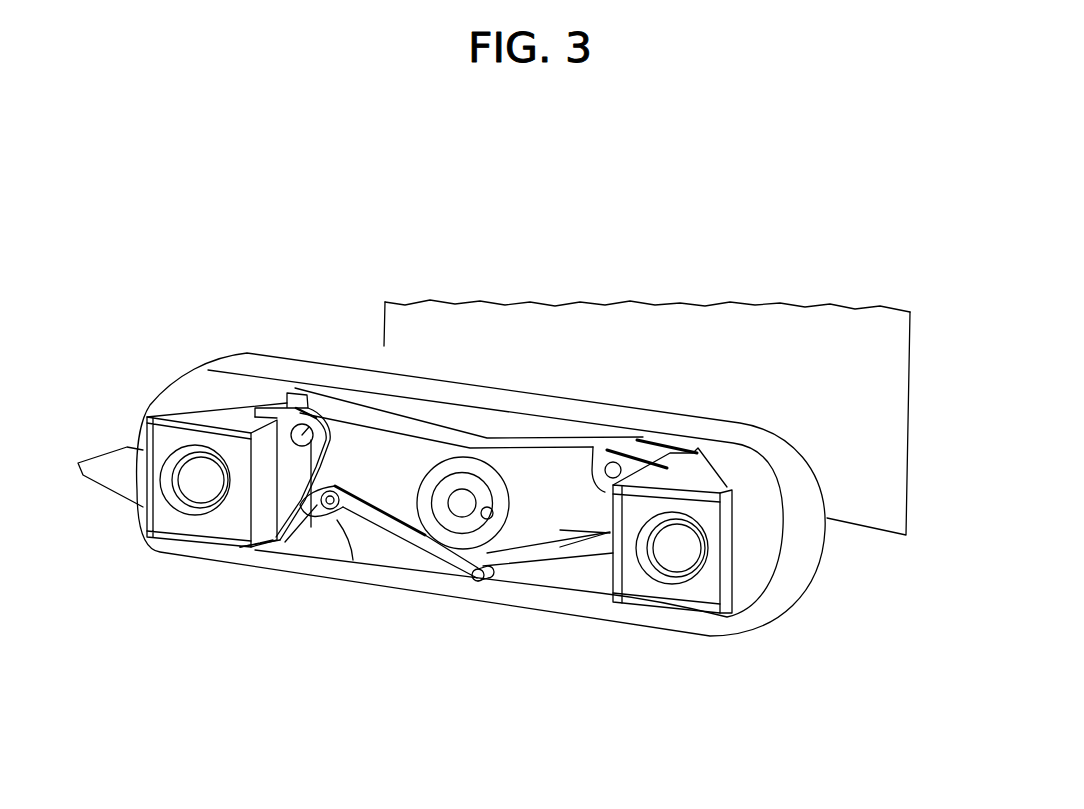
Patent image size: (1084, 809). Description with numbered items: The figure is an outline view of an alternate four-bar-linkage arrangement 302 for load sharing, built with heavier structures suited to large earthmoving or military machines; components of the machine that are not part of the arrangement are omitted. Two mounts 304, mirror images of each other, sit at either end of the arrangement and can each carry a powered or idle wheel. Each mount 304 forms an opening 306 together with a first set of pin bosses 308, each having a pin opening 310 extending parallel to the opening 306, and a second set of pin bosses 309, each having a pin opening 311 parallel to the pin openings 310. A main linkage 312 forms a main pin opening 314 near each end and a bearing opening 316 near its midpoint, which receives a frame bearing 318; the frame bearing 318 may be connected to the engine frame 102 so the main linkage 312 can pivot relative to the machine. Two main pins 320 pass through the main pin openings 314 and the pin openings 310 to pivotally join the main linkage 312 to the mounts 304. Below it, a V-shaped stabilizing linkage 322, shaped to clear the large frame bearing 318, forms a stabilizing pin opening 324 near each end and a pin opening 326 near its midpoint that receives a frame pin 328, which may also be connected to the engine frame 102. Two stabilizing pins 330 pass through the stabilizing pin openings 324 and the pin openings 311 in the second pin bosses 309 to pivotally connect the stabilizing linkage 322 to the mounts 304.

The four-bar-linkage arrangement 302 is at (711, 140).
The engine frame 102 is at (807, 340).
The mount 304 is at (160, 517).
The opening 306 is at (207, 495).
The first set of pin bosses 308 is at (265, 455).
The second set of pin bosses 309 is at (318, 516).
The pin opening 310 is at (253, 413).
The pin opening 311 is at (282, 535).
The main linkage 312 is at (357, 441).
The main pin opening 314 is at (605, 485).
The bearing opening 316 is at (417, 480).
The frame bearing 318 is at (457, 517).
The main pin 320 is at (313, 413).
The stabilizing linkage 322 is at (390, 530).
The stabilizing pin opening 324 is at (257, 520).
The pin opening 326 is at (510, 563).
The frame pin 328 is at (477, 579).
The stabilizing pin 330 is at (326, 522).